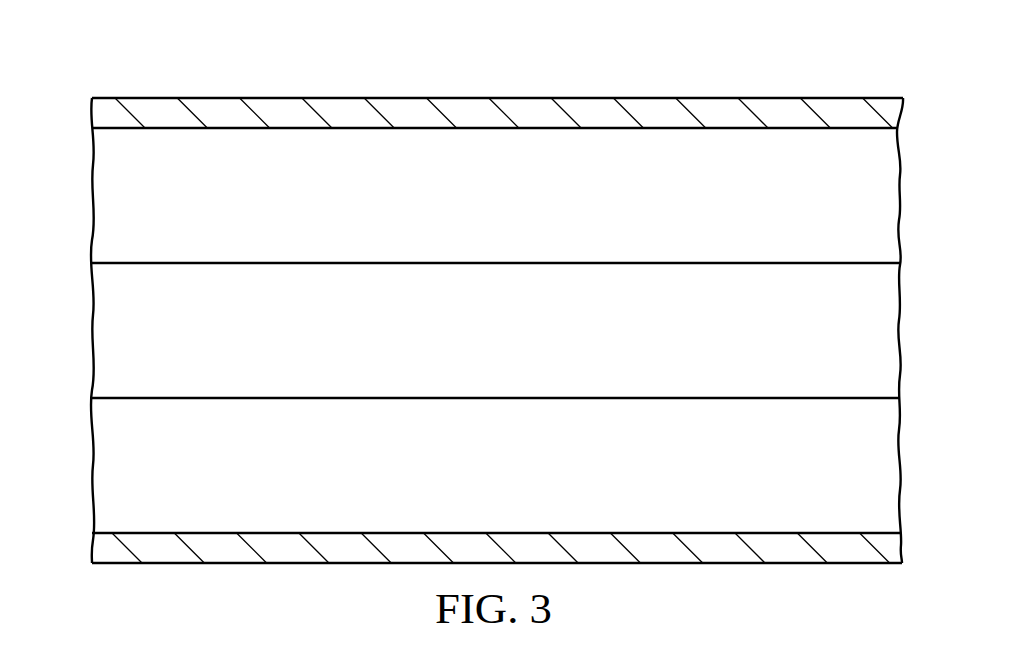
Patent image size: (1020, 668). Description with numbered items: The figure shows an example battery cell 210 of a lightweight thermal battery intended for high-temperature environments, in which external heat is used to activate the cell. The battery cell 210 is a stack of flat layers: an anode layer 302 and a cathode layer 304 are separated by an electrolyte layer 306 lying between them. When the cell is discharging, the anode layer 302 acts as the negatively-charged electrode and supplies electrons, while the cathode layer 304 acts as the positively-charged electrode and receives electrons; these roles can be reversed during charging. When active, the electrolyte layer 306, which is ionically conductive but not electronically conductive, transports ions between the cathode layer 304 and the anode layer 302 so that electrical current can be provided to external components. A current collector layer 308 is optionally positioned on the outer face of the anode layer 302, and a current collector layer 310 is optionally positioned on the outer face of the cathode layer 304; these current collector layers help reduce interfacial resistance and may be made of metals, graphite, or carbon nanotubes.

The battery cell 210 is at (654, 71).
The current collector layer 308 is at (277, 108).
The anode layer 302 is at (93, 198).
The electrolyte layer 306 is at (98, 305).
The cathode layer 304 is at (100, 448).
The current collector layer 310 is at (228, 552).